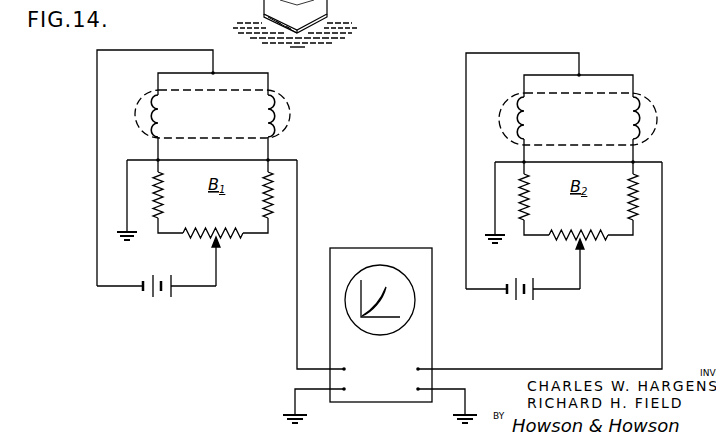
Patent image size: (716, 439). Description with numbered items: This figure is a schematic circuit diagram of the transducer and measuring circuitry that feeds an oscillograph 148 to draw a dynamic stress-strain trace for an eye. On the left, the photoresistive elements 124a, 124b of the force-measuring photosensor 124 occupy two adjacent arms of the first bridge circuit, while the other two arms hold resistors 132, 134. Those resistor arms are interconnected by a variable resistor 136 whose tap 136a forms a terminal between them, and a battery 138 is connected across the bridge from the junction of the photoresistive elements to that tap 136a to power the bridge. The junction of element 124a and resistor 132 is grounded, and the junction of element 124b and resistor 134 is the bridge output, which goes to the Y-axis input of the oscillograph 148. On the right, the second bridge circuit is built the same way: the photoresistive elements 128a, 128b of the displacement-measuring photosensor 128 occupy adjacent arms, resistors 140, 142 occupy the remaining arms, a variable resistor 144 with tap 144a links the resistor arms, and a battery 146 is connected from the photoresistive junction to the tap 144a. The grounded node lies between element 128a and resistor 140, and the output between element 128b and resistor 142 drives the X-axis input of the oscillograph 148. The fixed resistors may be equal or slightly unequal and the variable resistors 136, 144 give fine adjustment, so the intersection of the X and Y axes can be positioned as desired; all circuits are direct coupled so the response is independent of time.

The photosensor 124 is at (233, 115).
The photoresistive element 124a is at (163, 118).
The photoresistive element 124b is at (264, 107).
The photosensor 128 is at (599, 118).
The photoresistive element 128a is at (529, 118).
The photoresistive element 128b is at (628, 122).
The resistor 132 is at (163, 212).
The resistor 134 is at (263, 212).
The variable resistor 136 is at (236, 240).
The tap 136a is at (216, 255).
The battery 138 is at (164, 300).
The resistor 140 is at (529, 214).
The resistor 142 is at (628, 213).
The variable resistor 144 is at (600, 242).
The tap 144a is at (580, 260).
The battery 146 is at (526, 303).
The oscillograph 148 is at (393, 248).